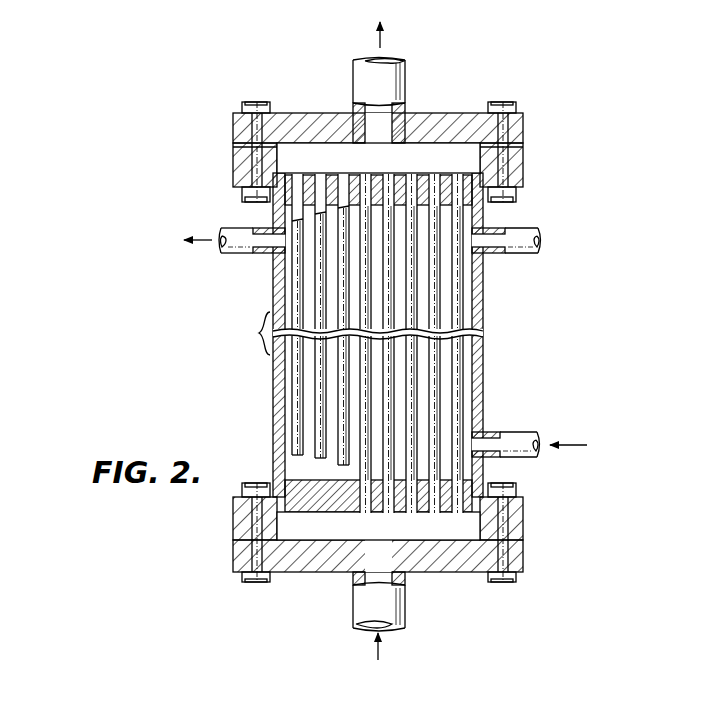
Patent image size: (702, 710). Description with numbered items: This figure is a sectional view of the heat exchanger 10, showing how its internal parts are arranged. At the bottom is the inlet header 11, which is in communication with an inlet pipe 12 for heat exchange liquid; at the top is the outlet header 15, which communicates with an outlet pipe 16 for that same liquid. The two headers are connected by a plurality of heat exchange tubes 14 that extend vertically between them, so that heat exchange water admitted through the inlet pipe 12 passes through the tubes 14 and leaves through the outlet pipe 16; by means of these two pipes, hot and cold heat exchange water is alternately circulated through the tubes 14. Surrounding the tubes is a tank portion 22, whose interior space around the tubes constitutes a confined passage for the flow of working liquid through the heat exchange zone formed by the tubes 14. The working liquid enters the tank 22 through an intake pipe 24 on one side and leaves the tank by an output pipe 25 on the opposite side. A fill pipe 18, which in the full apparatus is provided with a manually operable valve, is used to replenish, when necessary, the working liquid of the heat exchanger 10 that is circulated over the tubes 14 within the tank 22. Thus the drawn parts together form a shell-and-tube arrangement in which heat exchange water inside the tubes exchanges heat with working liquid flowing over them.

The heat exchanger 10 is at (385, 341).
The inlet header 11 is at (453, 527).
The inlet pipe 12 is at (360, 605).
The heat exchange tubes 14 is at (340, 405).
The outlet header 15 is at (420, 155).
The outlet pipe 16 is at (353, 75).
The fill pipe 18 is at (522, 228).
The tank portion 22 is at (485, 305).
The intake pipe 24 is at (522, 432).
The output pipe 25 is at (243, 254).